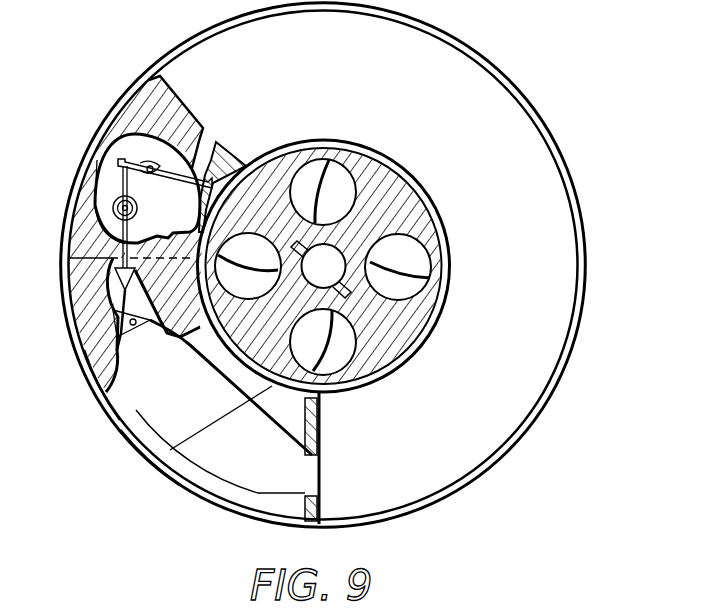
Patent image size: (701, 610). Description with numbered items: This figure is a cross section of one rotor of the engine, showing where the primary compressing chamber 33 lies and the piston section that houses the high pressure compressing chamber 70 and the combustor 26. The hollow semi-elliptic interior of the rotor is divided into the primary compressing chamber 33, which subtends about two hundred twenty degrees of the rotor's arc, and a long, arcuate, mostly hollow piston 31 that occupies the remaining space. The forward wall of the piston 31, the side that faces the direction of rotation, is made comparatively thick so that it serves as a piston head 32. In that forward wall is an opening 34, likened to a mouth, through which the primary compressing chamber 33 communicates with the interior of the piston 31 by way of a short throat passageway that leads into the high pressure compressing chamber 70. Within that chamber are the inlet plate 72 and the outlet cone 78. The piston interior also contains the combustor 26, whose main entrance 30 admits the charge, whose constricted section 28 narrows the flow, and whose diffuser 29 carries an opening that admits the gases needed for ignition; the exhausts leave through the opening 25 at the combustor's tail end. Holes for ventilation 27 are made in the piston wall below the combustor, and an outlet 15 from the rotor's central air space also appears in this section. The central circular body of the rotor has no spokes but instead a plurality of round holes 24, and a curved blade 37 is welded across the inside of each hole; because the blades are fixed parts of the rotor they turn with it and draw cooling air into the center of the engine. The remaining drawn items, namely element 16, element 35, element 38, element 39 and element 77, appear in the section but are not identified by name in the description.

The outlet 15 is at (218, 351).
The housing wall 16 is at (72, 195).
The round holes 24 is at (342, 344).
The exhaust opening 25 is at (313, 472).
The combustor 26 is at (250, 453).
The ventilation holes 27 is at (157, 470).
The constricted section of the combustor 28 is at (113, 388).
The diffuser 29 is at (113, 325).
The main entrance to the combustor 30 is at (100, 290).
The piston 31 is at (67, 280).
The piston head 32 is at (182, 100).
The primary compressing chamber 33 is at (324, 247).
The opening 34 is at (213, 143).
The hub 35 is at (346, 262).
The curved blade 37 is at (323, 193).
The casing 38 is at (627, 322).
The reel opening 39 is at (452, 295).
The high pressure compressing chamber 70 is at (143, 228).
The inlet plate 72 is at (149, 235).
The lever arm 77 is at (120, 128).
The outlet cone 78 is at (62, 233).